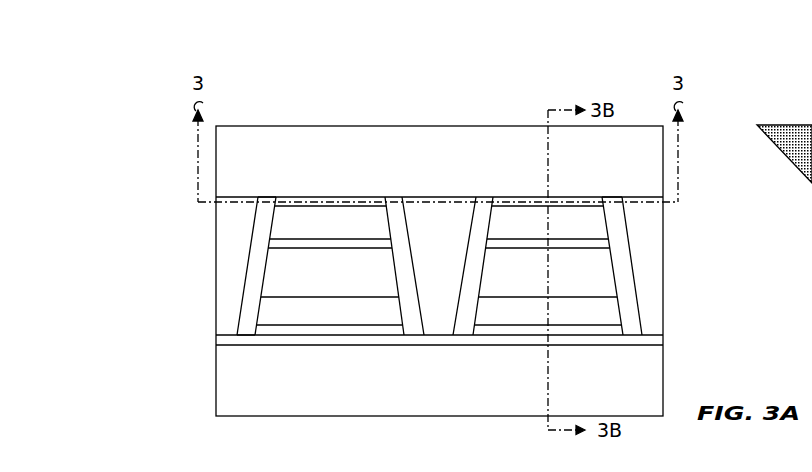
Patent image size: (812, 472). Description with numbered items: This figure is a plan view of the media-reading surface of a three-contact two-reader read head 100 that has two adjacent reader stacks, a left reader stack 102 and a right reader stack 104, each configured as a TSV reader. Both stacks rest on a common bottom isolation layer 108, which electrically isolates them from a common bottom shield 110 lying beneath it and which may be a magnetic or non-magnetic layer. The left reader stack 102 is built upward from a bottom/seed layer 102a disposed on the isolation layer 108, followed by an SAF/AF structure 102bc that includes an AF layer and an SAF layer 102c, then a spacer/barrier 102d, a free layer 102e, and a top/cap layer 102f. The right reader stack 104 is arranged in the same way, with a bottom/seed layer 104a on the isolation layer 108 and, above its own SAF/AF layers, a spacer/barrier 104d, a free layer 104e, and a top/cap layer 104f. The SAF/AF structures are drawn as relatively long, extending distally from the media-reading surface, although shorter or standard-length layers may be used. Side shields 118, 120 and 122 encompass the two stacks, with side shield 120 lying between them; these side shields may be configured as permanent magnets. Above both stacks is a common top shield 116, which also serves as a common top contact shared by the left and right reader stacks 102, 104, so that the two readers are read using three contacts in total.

The read head 100 is at (358, 102).
The left reader stack 102 is at (152, 198).
The bottom/seed layer 102a is at (268, 330).
The SAF/AF structure 102bc is at (214, 250).
The SAF layer 102c is at (352, 283).
The spacer/barrier 102d is at (290, 247).
The free layer 102e is at (348, 235).
The top/cap layer 102f is at (288, 198).
The right reader stack 104 is at (678, 198).
The bottom/seed layer 104a is at (602, 328).
The spacer/barrier 104d is at (595, 246).
The free layer 104e is at (572, 235).
The top/cap layer 104f is at (590, 198).
The common bottom isolation layer 108 is at (648, 343).
The common bottom shield 110 is at (383, 393).
The common top shield 116 is at (362, 173).
The side shield 118 is at (252, 227).
The side shield 120 is at (453, 233).
The side shield 122 is at (658, 227).